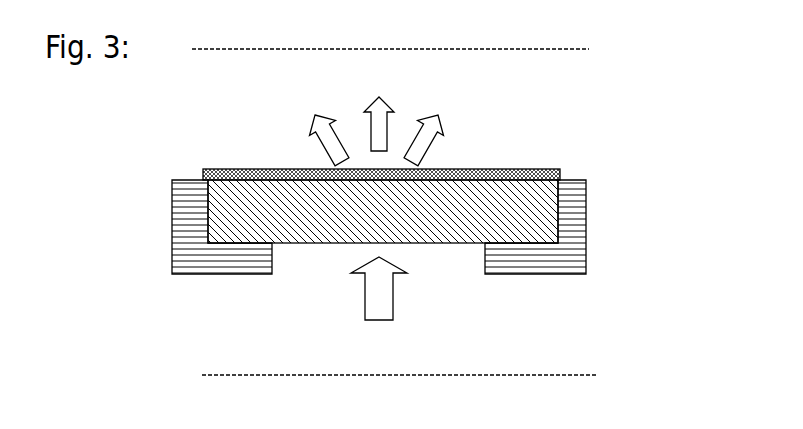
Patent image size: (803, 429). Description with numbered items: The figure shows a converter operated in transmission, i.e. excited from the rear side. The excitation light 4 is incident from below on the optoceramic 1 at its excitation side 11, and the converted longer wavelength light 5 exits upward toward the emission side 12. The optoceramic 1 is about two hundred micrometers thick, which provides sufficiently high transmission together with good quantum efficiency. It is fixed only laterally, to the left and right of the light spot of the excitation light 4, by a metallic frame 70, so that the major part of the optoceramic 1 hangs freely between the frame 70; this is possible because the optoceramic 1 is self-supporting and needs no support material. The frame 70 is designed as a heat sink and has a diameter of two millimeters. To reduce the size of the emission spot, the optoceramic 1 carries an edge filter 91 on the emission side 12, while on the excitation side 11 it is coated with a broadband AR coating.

The optoceramic 1 is at (276, 196).
The excitation light 4 is at (397, 297).
The converted longer wavelength light 5 is at (446, 130).
The excitation side 11 is at (597, 375).
The emission side 12 is at (589, 49).
The metallic frame 70 is at (586, 258).
The edge filter 91 is at (578, 170).